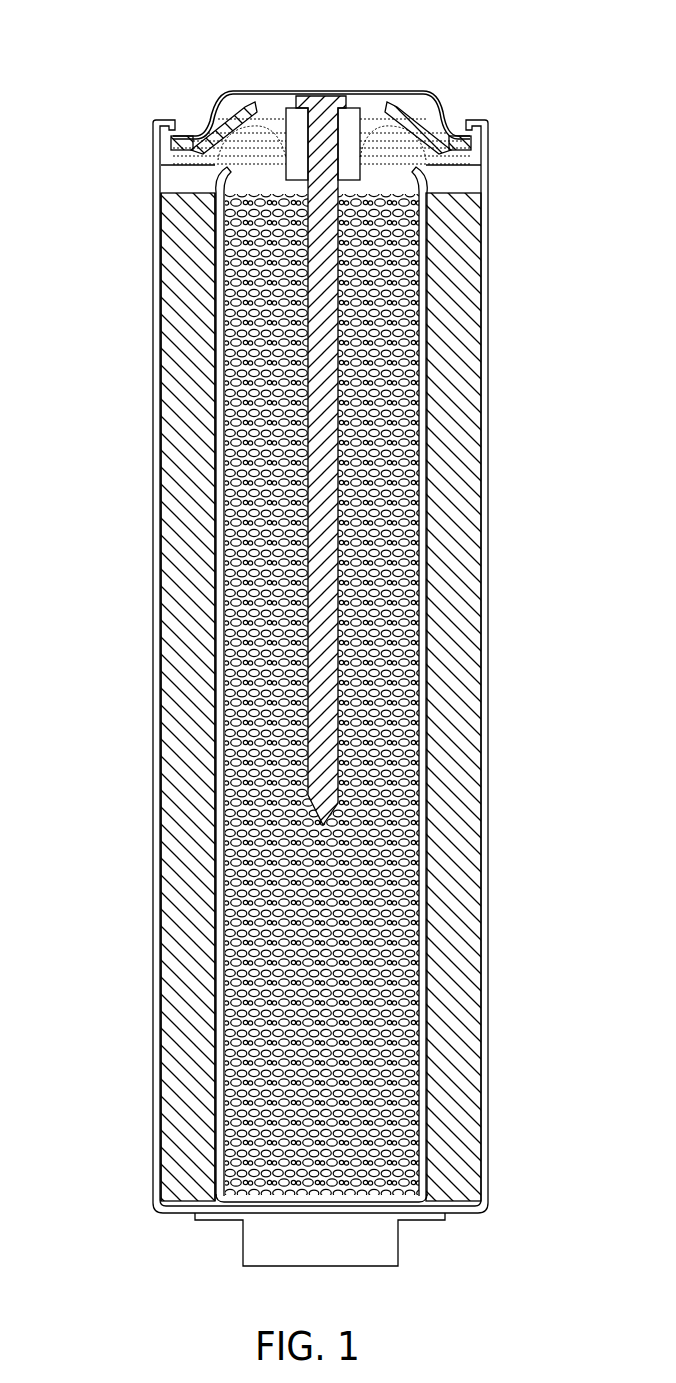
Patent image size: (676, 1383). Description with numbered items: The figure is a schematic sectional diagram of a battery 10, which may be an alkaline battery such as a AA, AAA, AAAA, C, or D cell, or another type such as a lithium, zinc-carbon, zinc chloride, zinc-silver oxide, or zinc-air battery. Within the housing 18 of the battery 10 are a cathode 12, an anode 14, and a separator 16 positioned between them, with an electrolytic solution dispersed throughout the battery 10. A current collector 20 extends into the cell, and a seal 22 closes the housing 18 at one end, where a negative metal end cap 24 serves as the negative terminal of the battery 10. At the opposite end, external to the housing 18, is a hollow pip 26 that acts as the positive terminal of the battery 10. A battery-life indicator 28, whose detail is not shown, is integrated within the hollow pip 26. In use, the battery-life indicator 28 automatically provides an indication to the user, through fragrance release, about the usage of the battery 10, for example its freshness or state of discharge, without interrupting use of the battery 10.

The battery 10 is at (119, 32).
The cathode 12 is at (160, 470).
The anode 14 is at (397, 897).
The separator 16 is at (208, 820).
The housing 18 is at (480, 422).
The current collector 20 is at (318, 632).
The seal 22 is at (287, 120).
The negative metal end cap 24 is at (371, 88).
The hollow pip 26 is at (391, 1235).
The battery-life indicator 28 is at (323, 1242).